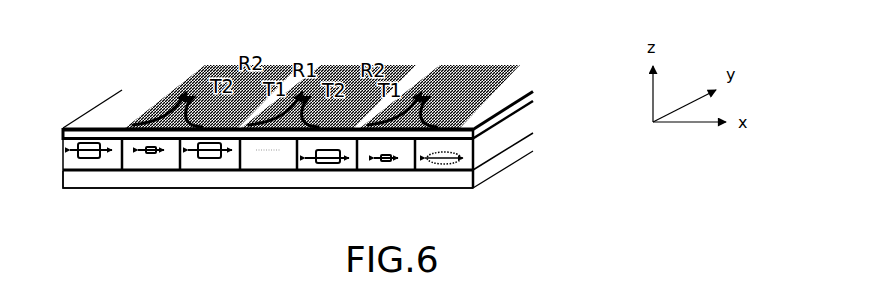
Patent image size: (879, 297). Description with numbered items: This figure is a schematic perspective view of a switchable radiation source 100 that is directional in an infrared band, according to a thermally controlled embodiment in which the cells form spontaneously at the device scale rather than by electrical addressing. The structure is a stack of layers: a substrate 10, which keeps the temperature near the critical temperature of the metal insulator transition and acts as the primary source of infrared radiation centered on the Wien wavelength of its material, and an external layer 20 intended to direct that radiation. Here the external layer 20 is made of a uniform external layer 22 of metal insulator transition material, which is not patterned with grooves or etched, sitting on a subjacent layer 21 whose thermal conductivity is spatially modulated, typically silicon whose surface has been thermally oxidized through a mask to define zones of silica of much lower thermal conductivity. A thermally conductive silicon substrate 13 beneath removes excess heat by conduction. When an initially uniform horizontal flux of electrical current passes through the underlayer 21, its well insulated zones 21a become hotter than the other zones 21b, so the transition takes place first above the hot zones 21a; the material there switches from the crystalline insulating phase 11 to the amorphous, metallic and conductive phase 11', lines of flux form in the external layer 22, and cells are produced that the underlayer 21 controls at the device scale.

The switchable radiation source 100 is at (549, 46).
The crystalline insulating phase 11 is at (380, 73).
The amorphous metallic phase 11' is at (212, 71).
The uniform external layer 22 is at (63, 133).
The external layer 20 is at (547, 88).
The substrate 10 is at (547, 131).
The subjacent layer 21 is at (62, 160).
The hot zones 21a is at (128, 160).
The cooler zones 21b is at (243, 160).
The thermally conductive substrate 13 is at (452, 180).